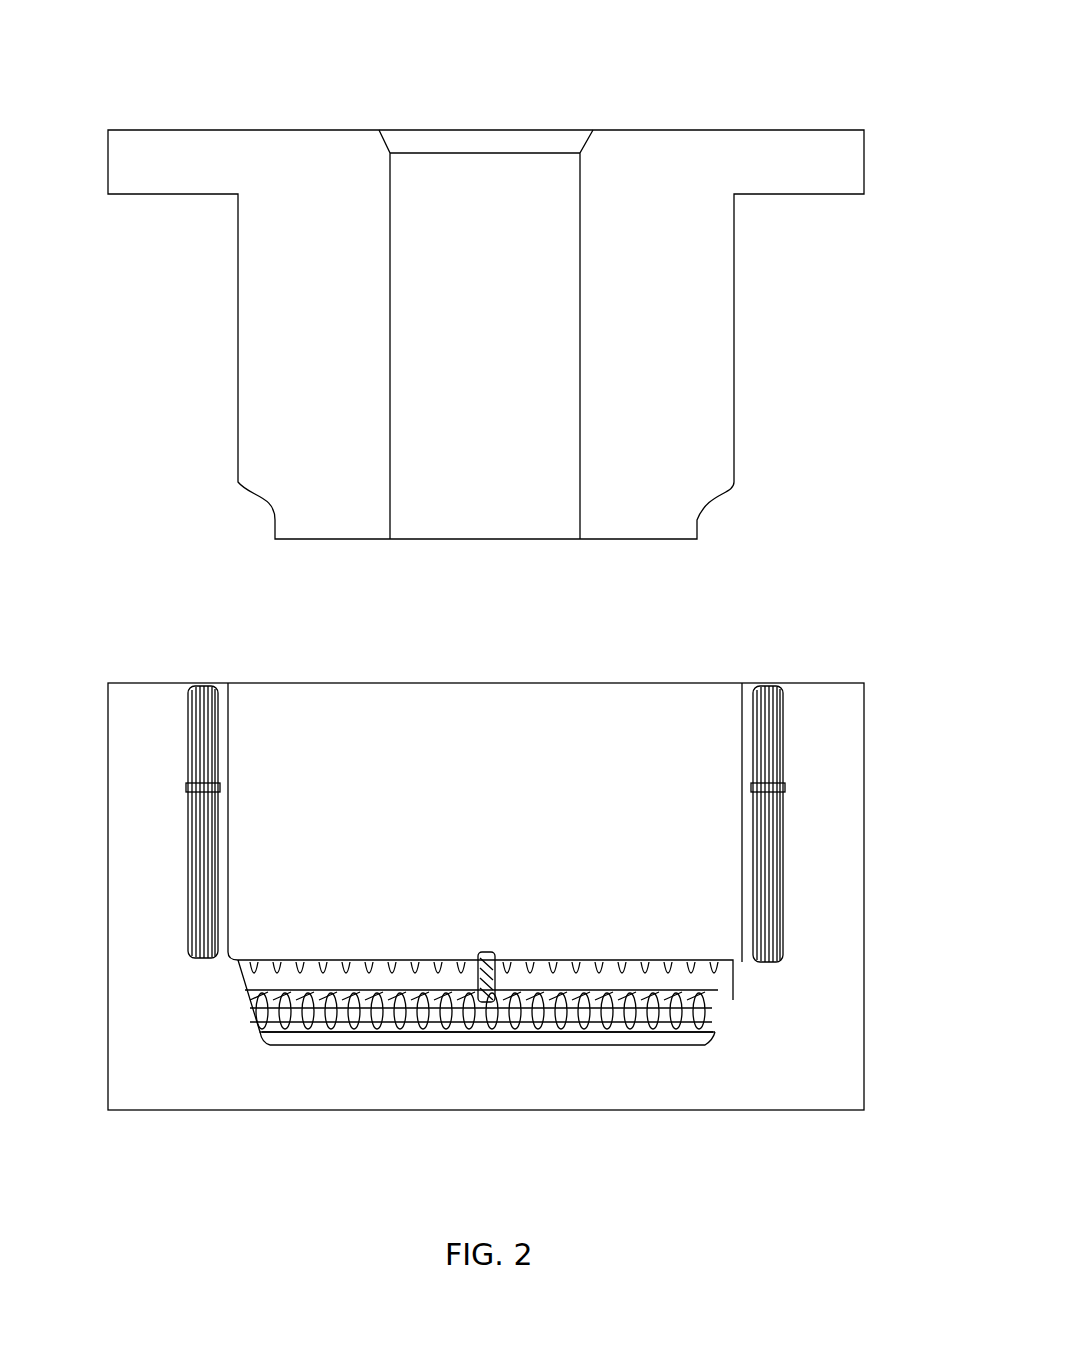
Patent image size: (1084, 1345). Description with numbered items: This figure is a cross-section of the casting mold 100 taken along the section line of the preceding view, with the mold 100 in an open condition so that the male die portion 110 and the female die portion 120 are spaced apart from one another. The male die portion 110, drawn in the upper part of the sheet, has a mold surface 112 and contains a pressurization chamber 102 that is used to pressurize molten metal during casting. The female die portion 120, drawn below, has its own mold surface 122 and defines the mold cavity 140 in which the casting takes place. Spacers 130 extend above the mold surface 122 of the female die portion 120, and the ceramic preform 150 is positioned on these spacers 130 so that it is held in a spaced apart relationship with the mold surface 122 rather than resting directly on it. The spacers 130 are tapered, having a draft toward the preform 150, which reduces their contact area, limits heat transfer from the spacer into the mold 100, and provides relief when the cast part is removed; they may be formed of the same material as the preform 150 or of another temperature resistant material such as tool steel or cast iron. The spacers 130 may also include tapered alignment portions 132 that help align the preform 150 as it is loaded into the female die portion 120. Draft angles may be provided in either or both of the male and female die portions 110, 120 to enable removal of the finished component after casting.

The mold 100 is at (803, 72).
The male die portion 110 is at (204, 145).
The pressurization chamber 102 is at (503, 325).
The mold surface 112 is at (735, 378).
The female die portion 120 is at (137, 700).
The ceramic preform 150 is at (686, 703).
The spacers 130 is at (222, 974).
The tapered alignment portions 132 is at (742, 958).
The mold surface 122 is at (700, 988).
The mold cavity 140 is at (395, 1010).